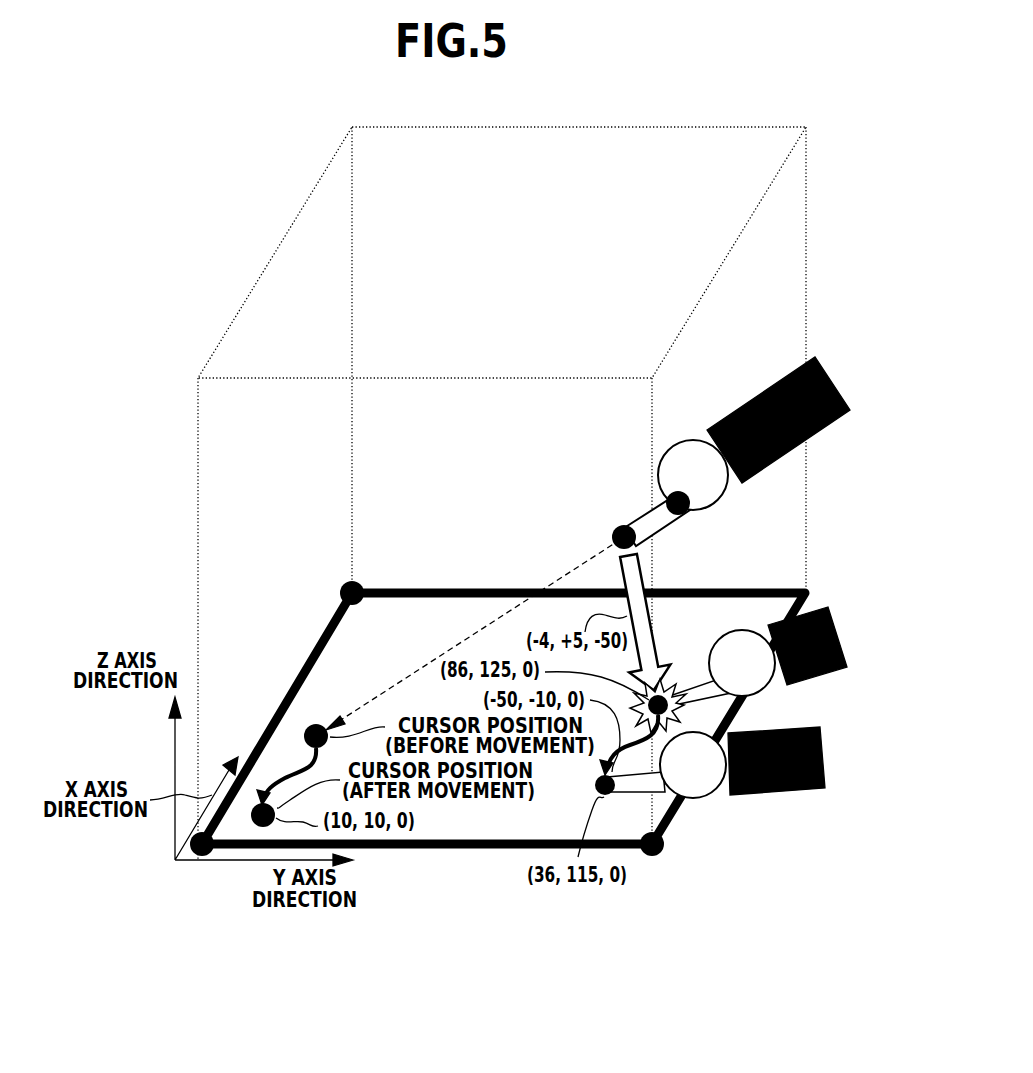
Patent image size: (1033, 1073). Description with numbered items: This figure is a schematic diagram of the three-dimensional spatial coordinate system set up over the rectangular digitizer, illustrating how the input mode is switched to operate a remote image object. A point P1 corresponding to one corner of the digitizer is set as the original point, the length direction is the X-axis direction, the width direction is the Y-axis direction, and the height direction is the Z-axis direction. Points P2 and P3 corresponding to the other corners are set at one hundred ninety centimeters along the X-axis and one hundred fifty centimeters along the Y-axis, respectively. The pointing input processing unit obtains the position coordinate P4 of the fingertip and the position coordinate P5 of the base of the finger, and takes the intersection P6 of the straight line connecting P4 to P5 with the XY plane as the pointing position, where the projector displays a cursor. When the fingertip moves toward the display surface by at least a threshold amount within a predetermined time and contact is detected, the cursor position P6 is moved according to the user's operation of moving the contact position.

The original point P1 is at (198, 856).
The corner point P2 is at (343, 587).
The corner point P3 is at (661, 856).
The position coordinate of fingertip P4 is at (612, 530).
The position coordinate of base of finger P5 is at (688, 441).
The cursor position P6 is at (318, 724).